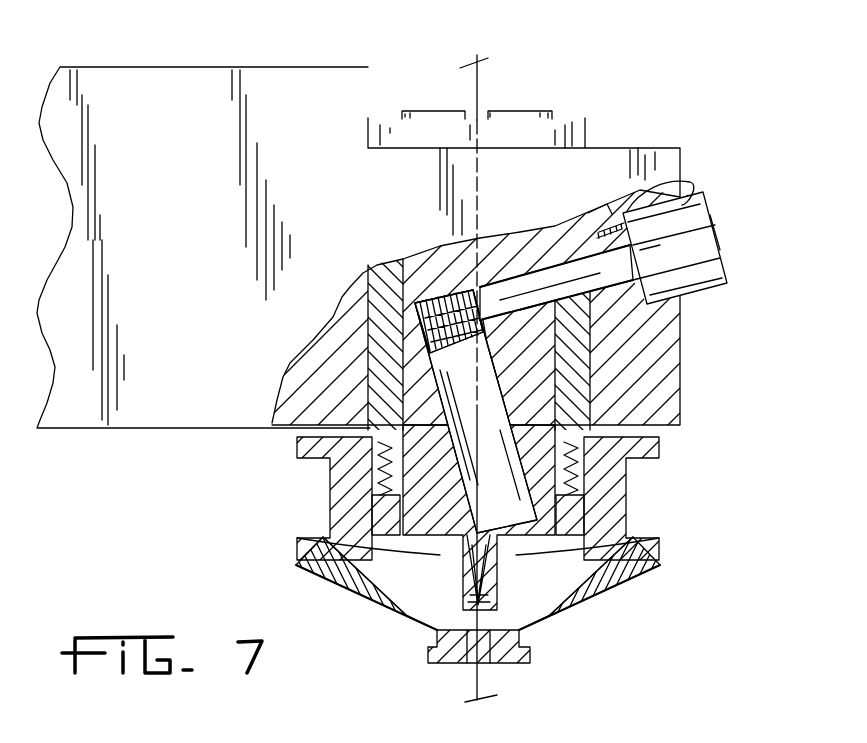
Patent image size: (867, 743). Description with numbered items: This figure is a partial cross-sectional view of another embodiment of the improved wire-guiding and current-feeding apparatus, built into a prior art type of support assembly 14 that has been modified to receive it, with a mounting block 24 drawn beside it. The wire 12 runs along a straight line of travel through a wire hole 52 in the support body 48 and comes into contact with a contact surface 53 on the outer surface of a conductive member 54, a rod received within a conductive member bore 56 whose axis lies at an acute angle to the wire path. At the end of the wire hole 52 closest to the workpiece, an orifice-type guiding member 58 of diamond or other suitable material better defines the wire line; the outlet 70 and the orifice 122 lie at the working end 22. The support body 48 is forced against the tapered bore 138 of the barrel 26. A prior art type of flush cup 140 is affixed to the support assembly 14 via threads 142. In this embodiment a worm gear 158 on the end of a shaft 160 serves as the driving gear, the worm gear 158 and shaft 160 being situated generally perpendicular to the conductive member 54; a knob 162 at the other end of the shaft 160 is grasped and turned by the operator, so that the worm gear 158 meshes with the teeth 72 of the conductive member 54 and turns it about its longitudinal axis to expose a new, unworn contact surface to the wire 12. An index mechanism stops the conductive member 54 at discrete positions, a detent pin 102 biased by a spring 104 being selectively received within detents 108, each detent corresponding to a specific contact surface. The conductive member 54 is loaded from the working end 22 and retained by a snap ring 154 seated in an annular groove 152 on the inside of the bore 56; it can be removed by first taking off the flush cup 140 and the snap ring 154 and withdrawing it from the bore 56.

The wire 12 is at (480, 85).
The support assembly 14 is at (687, 122).
The working end 22 is at (376, 630).
The mounting block 24 is at (208, 240).
The barrel 26 is at (600, 400).
The support body 48 is at (635, 465).
The wire hole 52 is at (385, 602).
The contact surface 53 is at (560, 386).
The conductive member 54 is at (370, 438).
The conductive member bore 56 is at (585, 482).
The guiding member 58 is at (500, 602).
The nozzle outlet 70 is at (487, 647).
The teeth 72 is at (425, 350).
The detent pin 102 is at (622, 228).
The spring 104 is at (605, 210).
The detents 108 is at (678, 198).
The outlet orifice 122 is at (438, 677).
The tapered bore 138 is at (400, 508).
The flush cup 140 is at (597, 575).
The threads 142 is at (380, 468).
The annular groove 152 is at (340, 582).
The snap ring 154 is at (620, 545).
The worm gear 158 is at (445, 300).
The shaft 160 is at (520, 285).
The knob 162 is at (705, 237).